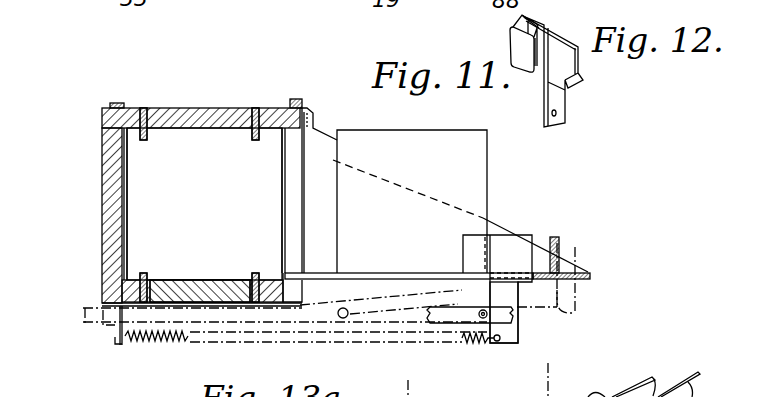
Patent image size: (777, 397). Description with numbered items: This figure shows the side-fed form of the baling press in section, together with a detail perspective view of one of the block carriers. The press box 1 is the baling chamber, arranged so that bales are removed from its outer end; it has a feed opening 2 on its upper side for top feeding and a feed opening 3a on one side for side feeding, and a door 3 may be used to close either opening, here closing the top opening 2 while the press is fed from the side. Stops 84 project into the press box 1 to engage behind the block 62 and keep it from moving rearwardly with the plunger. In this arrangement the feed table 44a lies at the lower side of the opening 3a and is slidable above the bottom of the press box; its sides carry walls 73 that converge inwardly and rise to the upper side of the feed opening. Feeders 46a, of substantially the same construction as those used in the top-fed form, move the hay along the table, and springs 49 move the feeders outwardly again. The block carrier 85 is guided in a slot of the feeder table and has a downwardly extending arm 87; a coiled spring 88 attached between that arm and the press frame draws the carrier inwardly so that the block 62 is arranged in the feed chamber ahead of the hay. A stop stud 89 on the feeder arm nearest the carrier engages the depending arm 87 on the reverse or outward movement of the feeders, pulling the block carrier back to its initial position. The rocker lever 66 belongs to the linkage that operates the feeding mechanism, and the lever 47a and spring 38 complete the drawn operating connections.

In FIG. 11, the press box 1 is at (204, 204).
In FIG. 11, the feed opening 2 is at (108, 127).
In FIG. 11, the door 3 is at (200, 116).
In FIG. 11, the feed opening 3a is at (125, 104).
In FIG. 11, the stops 84 is at (152, 120).
In FIG. 11, the block 62 is at (488, 156).
In FIG. 11, the walls 73 is at (334, 160).
In FIG. 11, the rocker lever 66 is at (404, 272).
In FIG. 11, the feed table 44a is at (288, 273).
In FIG. 11, the block carrier 85 is at (515, 243).
In FIG. 12, the block carrier 85 is at (537, 19).
In FIG. 11, the arm 87 is at (512, 330).
In FIG. 12, the arm 87 is at (560, 108).
In FIG. 11, the post 47a is at (562, 247).
In FIG. 11, the springs 49 is at (588, 280).
In FIG. 11, the feeders 46a is at (450, 323).
In FIG. 11, the stop stud 89 is at (483, 310).
In FIG. 11, the coiled spring 88 is at (476, 342).
In FIG. 11, the spring 38 is at (170, 341).